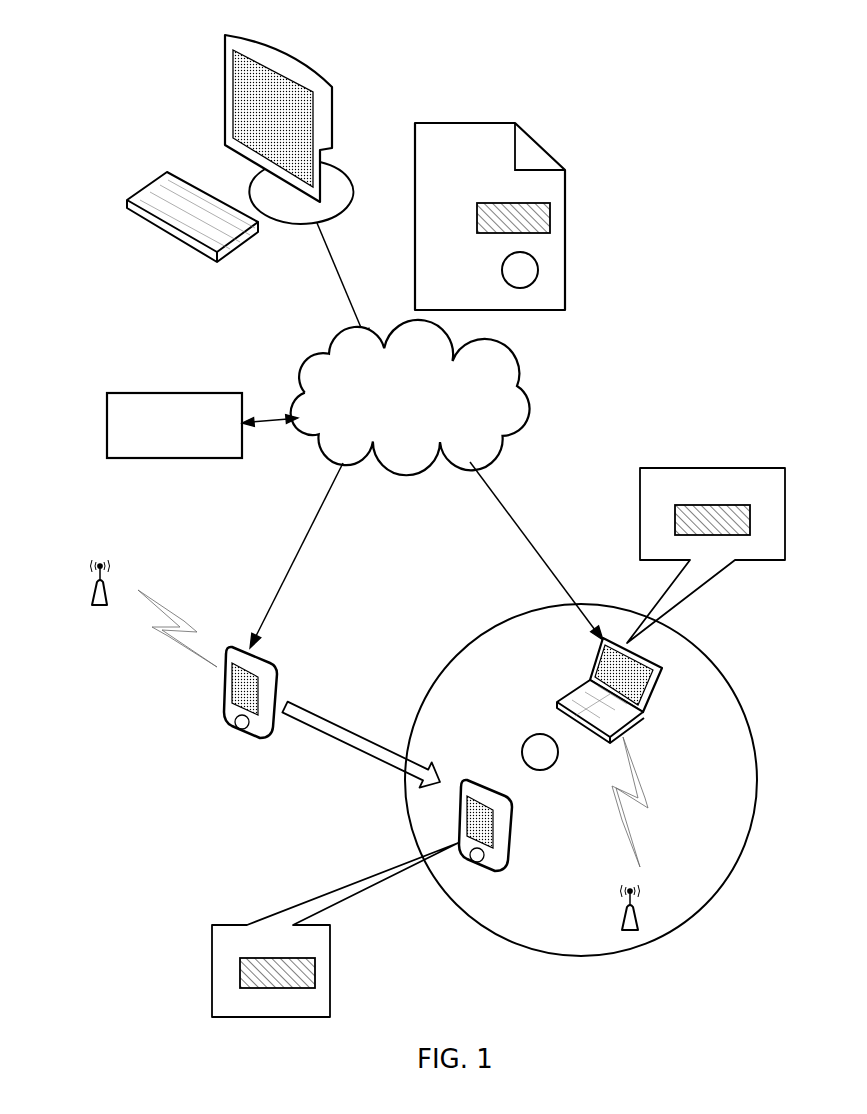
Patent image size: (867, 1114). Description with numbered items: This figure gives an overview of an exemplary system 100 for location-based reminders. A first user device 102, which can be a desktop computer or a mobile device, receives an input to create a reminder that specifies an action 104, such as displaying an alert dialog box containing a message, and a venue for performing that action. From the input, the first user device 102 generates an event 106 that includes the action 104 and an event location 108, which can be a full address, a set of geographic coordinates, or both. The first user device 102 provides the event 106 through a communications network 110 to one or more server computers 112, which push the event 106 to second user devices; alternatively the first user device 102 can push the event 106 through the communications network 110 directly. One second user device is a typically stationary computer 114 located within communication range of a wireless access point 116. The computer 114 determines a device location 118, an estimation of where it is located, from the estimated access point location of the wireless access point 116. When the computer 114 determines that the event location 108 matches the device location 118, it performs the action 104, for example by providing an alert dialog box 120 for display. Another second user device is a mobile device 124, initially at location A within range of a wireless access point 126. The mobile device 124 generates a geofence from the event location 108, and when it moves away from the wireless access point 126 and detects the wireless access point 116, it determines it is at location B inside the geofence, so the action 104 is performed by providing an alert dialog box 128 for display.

The system 100 is at (106, 117).
The first user device 102 is at (323, 77).
The action 104 is at (552, 215).
The event 106 is at (495, 122).
The event location 108 is at (540, 267).
The communications network 110 is at (535, 393).
The server computers 112 is at (173, 393).
The computer 114 is at (657, 688).
The wireless access point 116 is at (638, 920).
The device location 118 is at (490, 627).
The alert dialog box 120 is at (710, 468).
The mobile device 124 is at (240, 647).
The wireless access point 126 is at (107, 583).
The alert dialog box 128 is at (247, 923).